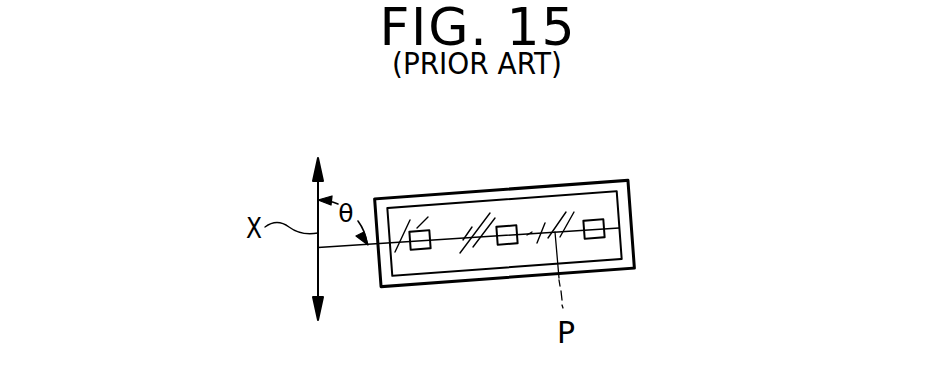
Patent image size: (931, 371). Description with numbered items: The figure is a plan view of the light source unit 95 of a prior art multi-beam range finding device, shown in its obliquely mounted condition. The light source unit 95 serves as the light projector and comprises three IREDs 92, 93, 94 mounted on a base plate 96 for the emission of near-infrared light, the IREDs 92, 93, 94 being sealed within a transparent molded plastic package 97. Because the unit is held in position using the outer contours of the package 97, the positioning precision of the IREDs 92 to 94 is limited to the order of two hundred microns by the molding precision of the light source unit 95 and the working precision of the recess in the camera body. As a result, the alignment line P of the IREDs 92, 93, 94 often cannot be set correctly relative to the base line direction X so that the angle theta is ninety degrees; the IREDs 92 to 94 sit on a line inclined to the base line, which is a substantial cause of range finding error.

The IRED 92 is at (419, 231).
The IRED 93 is at (505, 226).
The IRED 94 is at (597, 220).
The light source unit 95 is at (641, 205).
The base plate 96 is at (439, 273).
The transparent molded plastic package 97 is at (634, 257).